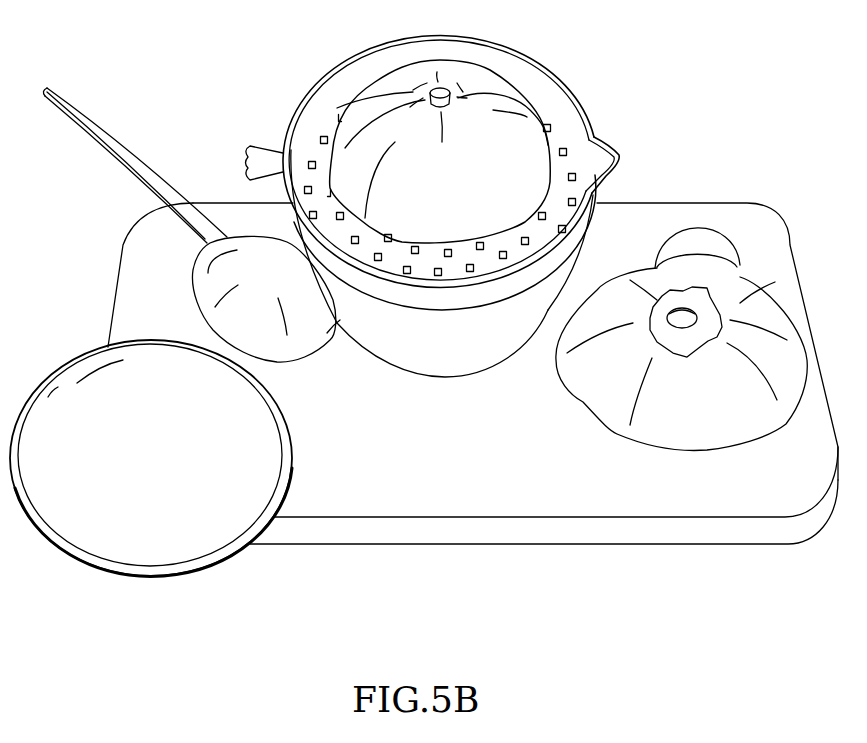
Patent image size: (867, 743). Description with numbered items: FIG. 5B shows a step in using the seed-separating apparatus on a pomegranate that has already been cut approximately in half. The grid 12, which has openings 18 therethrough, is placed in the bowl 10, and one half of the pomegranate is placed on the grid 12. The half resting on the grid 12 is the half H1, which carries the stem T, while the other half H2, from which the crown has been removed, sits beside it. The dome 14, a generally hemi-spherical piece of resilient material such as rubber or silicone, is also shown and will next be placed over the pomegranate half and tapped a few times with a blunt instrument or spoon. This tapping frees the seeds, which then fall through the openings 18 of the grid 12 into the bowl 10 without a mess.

The bowl 10 is at (467, 375).
The grid 12 is at (598, 135).
The dome 14 is at (42, 427).
The openings 18 is at (310, 162).
The stem T is at (446, 88).
The half with a stem H1 is at (561, 167).
The half with a crown H2 is at (740, 303).